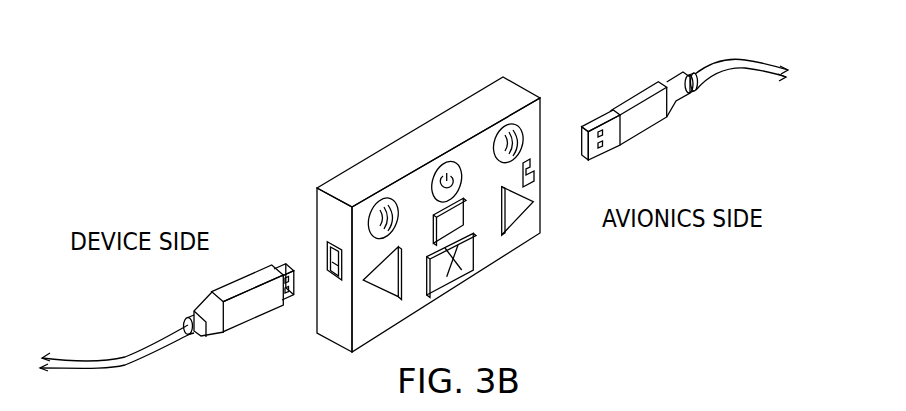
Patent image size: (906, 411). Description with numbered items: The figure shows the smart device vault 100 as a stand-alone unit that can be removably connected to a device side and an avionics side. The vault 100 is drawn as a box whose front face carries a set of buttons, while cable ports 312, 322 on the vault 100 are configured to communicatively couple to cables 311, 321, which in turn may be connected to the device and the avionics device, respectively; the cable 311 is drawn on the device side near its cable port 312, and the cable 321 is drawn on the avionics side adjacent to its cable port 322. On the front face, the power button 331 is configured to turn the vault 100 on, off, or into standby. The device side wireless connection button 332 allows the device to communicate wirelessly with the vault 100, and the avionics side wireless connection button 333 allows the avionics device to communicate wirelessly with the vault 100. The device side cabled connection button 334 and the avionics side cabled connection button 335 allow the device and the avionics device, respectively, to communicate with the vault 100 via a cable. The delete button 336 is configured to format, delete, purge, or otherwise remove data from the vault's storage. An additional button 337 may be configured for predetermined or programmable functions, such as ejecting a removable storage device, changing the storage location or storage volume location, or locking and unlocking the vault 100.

The vault 100 is at (513, 97).
The cable 311 is at (248, 268).
The cable port 312 is at (327, 273).
The cable 321 is at (668, 80).
The cable port 322 is at (537, 176).
The power button 331 is at (445, 168).
The device side wireless connection button 332 is at (375, 208).
The avionics side wireless connection button 333 is at (497, 137).
The device side cabled connection button 334 is at (393, 300).
The avionics side cabled connection button 335 is at (515, 220).
The delete button 336 is at (470, 270).
The button 337 is at (467, 225).